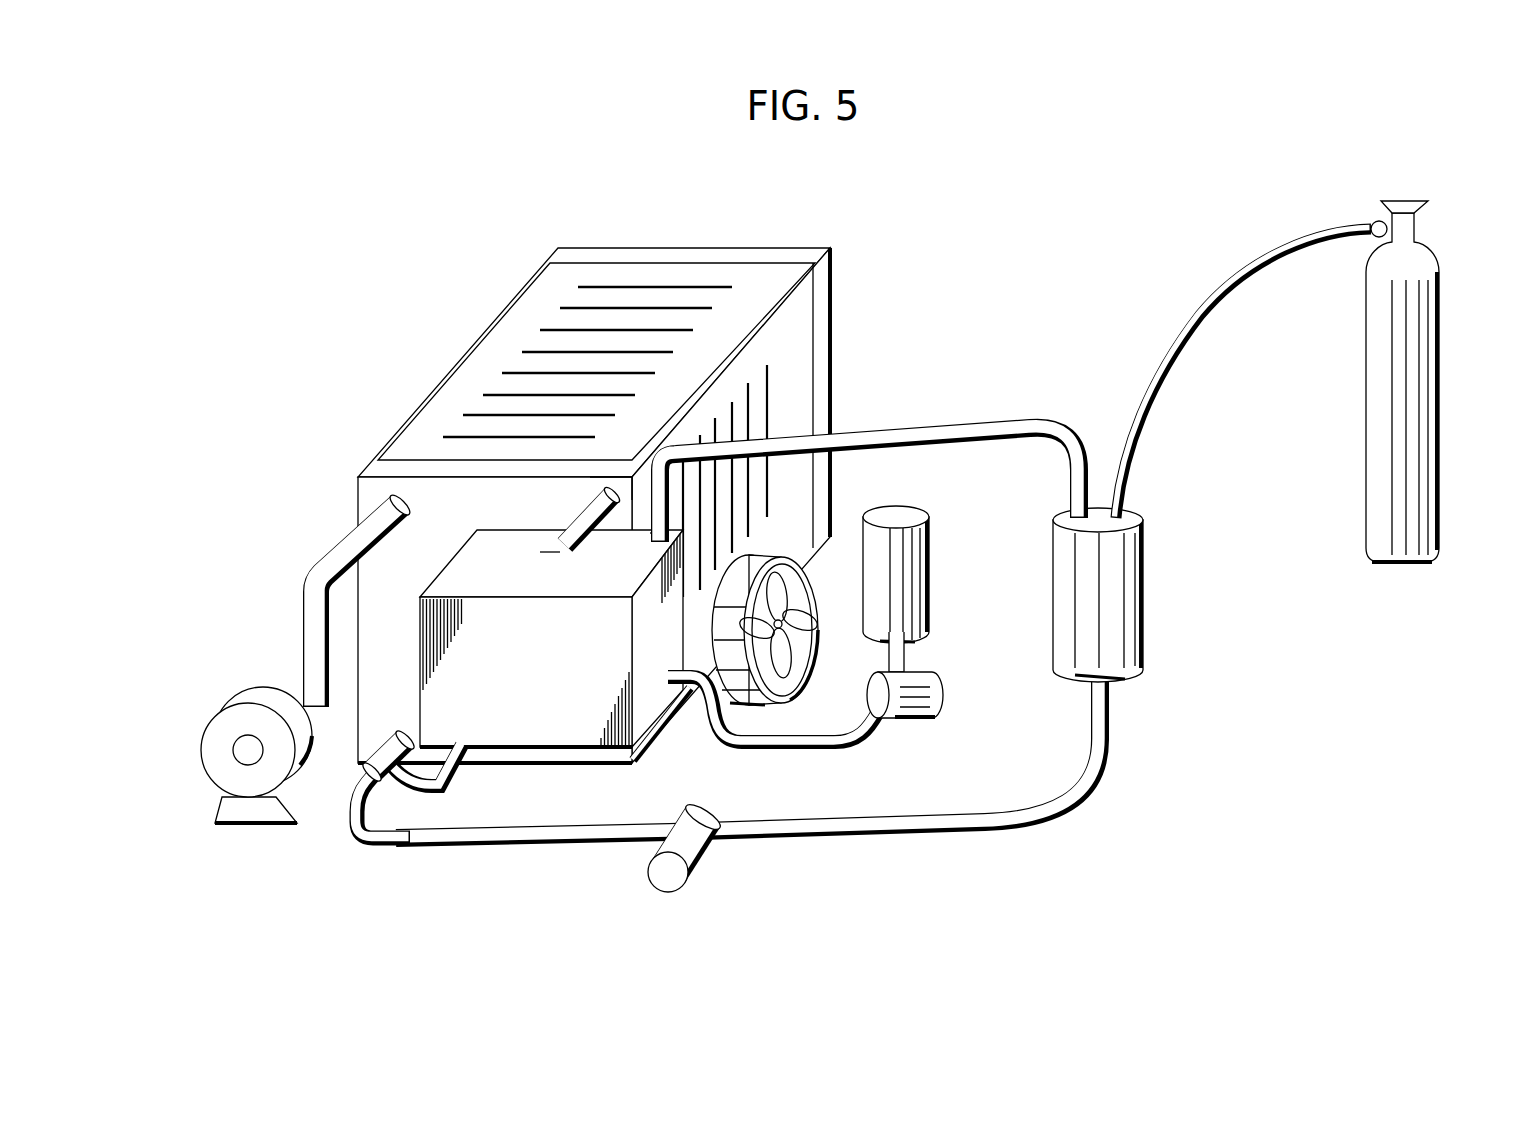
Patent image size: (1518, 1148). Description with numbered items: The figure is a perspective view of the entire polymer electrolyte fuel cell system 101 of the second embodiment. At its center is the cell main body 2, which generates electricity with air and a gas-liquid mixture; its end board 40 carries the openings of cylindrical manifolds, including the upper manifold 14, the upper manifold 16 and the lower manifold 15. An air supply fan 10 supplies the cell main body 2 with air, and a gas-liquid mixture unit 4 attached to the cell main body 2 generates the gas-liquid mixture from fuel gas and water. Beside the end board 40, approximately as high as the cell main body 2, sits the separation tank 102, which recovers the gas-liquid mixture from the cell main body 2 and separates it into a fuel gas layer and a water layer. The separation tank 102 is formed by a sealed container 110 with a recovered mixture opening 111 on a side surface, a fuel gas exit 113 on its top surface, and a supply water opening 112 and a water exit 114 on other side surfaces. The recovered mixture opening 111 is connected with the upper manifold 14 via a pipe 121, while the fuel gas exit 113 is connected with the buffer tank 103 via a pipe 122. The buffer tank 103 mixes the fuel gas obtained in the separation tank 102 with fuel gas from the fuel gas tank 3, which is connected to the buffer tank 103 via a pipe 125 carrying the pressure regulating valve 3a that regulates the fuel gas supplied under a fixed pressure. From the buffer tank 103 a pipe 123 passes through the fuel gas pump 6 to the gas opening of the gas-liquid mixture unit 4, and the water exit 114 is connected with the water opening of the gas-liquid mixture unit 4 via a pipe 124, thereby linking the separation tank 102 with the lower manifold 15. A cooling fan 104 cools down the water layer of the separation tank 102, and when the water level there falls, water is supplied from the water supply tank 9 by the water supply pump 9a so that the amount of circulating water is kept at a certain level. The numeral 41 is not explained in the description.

The polymer electrolyte fuel cell system 101 is at (942, 203).
The cell main body 2 is at (487, 258).
The top panel with vents 41 is at (665, 262).
The end board 40 is at (358, 474).
The upper manifold 14 is at (612, 468).
The upper manifold 16 is at (414, 500).
The air supply fan 10 is at (213, 738).
The pipe 121 is at (590, 505).
The recovered mixture opening 111 is at (583, 520).
The fuel gas exit 113 is at (652, 535).
The separation tank 102 is at (569, 728).
The supply water opening 112 is at (662, 669).
The sealed container 110 is at (665, 738).
The water exit 114 is at (500, 755).
The lower manifold 15 is at (389, 714).
The gas-liquid mixture unit 4 is at (363, 773).
The pipe 124 is at (394, 780).
The pipe 123 is at (507, 848).
The fuel gas pump 6 is at (665, 872).
The buffer tank 103 is at (1147, 612).
The pipe 122 is at (945, 420).
The pipe 125 is at (1195, 318).
The fuel gas tank 3 is at (1442, 253).
The pressure regulating valve 3a is at (1375, 220).
The water supply tank 9 is at (912, 573).
The water supply pump 9a is at (927, 693).
The cooling fan 104 is at (816, 702).